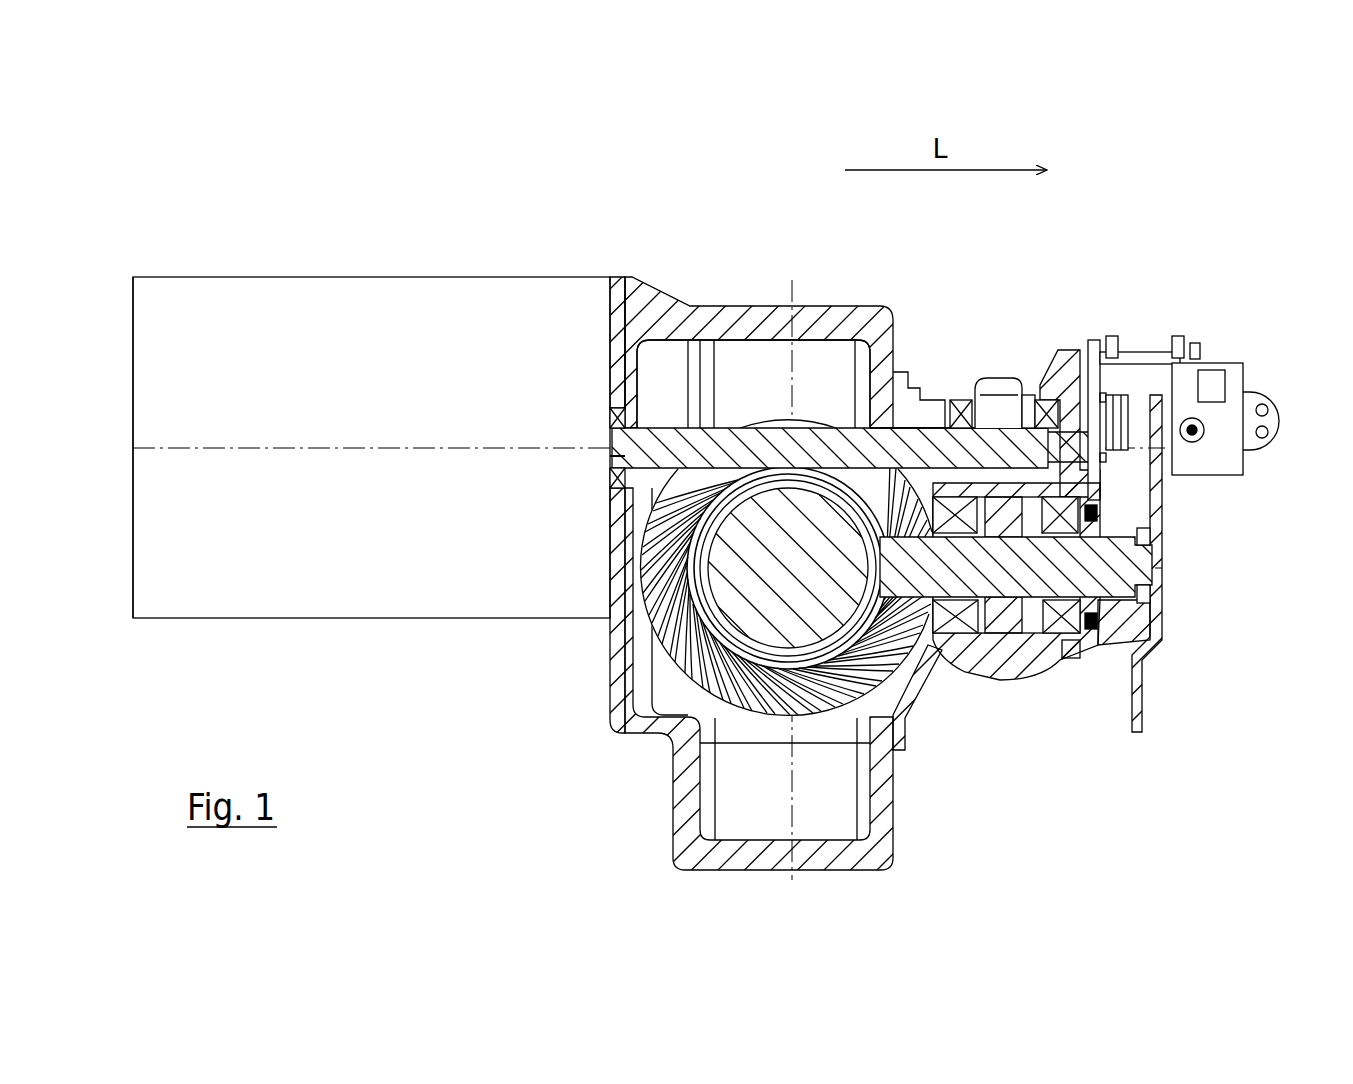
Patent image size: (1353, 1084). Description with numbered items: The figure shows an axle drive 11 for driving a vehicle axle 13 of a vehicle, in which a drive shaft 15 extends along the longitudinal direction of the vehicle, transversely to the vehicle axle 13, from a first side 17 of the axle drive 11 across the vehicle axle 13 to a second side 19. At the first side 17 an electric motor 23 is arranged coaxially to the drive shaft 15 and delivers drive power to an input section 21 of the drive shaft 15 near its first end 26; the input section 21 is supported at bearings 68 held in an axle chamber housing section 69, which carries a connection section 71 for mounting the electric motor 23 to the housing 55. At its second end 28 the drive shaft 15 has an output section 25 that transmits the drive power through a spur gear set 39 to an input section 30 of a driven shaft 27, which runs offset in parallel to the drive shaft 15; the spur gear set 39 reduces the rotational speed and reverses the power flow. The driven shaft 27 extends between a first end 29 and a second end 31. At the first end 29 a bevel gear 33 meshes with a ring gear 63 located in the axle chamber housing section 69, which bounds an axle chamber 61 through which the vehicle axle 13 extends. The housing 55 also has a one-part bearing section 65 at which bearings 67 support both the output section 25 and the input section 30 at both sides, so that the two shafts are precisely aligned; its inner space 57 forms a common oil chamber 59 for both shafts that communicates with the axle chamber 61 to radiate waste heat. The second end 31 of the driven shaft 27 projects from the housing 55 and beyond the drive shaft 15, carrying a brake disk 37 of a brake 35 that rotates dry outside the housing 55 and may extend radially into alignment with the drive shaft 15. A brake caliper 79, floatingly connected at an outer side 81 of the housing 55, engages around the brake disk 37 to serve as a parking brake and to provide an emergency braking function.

The axle drive 11 is at (158, 204).
The vehicle axle 13 is at (745, 592).
The drive shaft 15 is at (878, 438).
The first side 17 is at (593, 298).
The second side 19 is at (1086, 330).
The input section 21 is at (636, 431).
The electric motor 23 is at (390, 393).
The output section 25 is at (991, 429).
The first end 26 is at (612, 458).
The driven shaft 27 is at (996, 575).
The second end 28 is at (1109, 438).
The first end 29 is at (945, 657).
The input section 30 is at (984, 575).
The second end 31 is at (1152, 572).
The bevel gear 33 is at (917, 690).
The brake 35 is at (1216, 311).
The brake disk 37 is at (1143, 690).
The spur gear set 39 is at (1012, 427).
The housing 55 is at (1073, 647).
The inner space 57 is at (1152, 548).
The common oil chamber 59 is at (1143, 594).
The axle chamber 61 is at (821, 366).
The ring gear 63 is at (690, 682).
The bearing section 65 is at (1089, 647).
The bearings 67 is at (940, 400).
The bearings 68 is at (624, 406).
The axle chamber housing section 69 is at (722, 320).
The connection section 71 is at (608, 322).
The brake caliper 79 is at (1186, 368).
The outer side 81 is at (1096, 405).